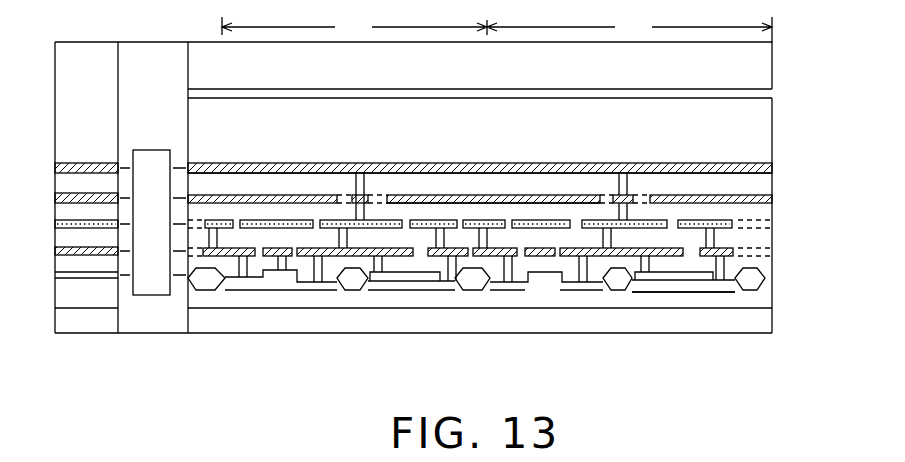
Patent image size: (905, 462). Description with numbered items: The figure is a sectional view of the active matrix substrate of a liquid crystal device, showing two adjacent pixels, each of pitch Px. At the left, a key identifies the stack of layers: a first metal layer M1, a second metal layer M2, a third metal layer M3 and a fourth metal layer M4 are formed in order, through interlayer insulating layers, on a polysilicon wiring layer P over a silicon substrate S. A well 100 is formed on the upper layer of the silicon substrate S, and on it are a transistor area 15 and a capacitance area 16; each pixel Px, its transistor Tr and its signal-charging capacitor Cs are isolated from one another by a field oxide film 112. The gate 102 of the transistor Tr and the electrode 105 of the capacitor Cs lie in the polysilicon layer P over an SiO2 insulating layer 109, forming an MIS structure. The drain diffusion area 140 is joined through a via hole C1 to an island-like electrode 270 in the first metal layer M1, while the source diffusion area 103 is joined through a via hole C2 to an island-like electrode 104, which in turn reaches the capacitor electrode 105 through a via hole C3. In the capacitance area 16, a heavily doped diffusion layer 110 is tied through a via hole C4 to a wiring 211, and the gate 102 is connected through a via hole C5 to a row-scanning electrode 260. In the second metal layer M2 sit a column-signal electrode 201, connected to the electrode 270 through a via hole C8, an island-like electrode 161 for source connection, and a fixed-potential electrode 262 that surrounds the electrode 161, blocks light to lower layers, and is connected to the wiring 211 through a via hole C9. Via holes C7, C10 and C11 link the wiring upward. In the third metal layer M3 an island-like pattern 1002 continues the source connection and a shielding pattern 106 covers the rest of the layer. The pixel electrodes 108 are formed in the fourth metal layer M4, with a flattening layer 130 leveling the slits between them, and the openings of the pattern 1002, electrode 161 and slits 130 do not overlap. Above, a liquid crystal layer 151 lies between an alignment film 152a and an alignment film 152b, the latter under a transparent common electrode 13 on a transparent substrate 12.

The transparent substrate 12 is at (507, 78).
The transparent common electrode 13 is at (748, 89).
The alignment film 152a is at (762, 99).
The alignment film 152b is at (767, 161).
The flattening layer 130 is at (205, 160).
The liquid crystal layer 151 is at (397, 130).
The fixed-potential electrode 262 is at (262, 221).
The row-scanning electrode 260 is at (275, 243).
The via hole C7 is at (342, 228).
The via hole C8 is at (468, 226).
The column-signal electrode 201 is at (482, 222).
The shielding pattern 106 is at (506, 212).
The island-like pattern 1002 is at (612, 198).
The island-like electrode 161 is at (600, 222).
The via hole C11 is at (628, 206).
The via hole C10 is at (636, 220).
The island-like electrode 104 is at (563, 247).
The pixel electrode 108 is at (742, 172).
The via hole C9 is at (715, 234).
The wiring 211 is at (735, 255).
The field oxide film 112 is at (752, 287).
The heavily doped diffusion layer 110 is at (748, 294).
The SiO2 insulating layer 109 is at (722, 283).
The signal-charging capacitor Cs is at (711, 306).
The electrode 105 is at (645, 290).
The source diffusion area 103 is at (588, 287).
The transistor Tr is at (580, 307).
The gate 102 is at (523, 290).
The island-like electrode 270 is at (224, 260).
The drain diffusion area 140 is at (490, 291).
The via hole C4 is at (451, 275).
The via hole C3 is at (379, 270).
The well 100 is at (327, 298).
The via hole C2 is at (315, 273).
The via hole C5 is at (249, 313).
The via hole C1 is at (243, 270).
The transistor area 15 is at (557, 304).
The capacitance area 16 is at (697, 316).
The pixel Px is at (497, 28).
The fourth metal layer M4 is at (120, 170).
The third metal layer M3 is at (120, 198).
The second metal layer M2 is at (120, 225).
The first metal layer M1 is at (120, 252).
The polysilicon wiring layer P is at (120, 277).
The silicon substrate S is at (86, 307).